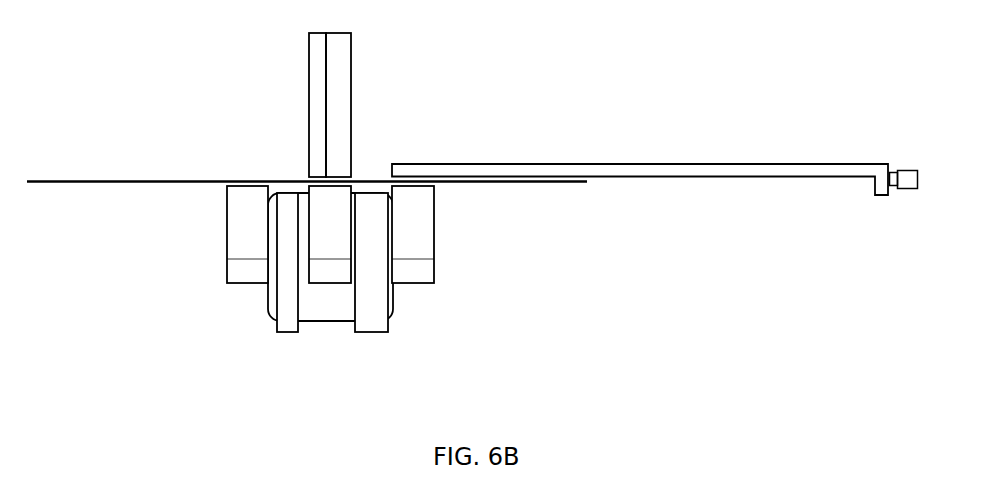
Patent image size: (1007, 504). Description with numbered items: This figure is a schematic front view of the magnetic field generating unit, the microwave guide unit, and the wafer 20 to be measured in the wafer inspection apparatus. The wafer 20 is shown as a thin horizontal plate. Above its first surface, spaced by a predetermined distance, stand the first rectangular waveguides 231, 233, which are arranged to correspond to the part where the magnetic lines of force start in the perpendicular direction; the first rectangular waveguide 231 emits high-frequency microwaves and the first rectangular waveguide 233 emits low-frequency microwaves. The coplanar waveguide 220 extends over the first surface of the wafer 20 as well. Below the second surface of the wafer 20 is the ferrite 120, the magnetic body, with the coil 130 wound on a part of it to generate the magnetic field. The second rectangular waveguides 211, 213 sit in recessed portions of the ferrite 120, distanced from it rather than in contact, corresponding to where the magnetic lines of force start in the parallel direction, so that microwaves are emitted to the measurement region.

The wafer 20 is at (90, 180).
The ferrite 120 is at (238, 218).
The coil 130 is at (328, 318).
The second rectangular waveguide 211 is at (287, 304).
The second rectangular waveguide 213 is at (380, 308).
The coplanar waveguide 220 is at (772, 166).
The first rectangular waveguide 231 is at (315, 55).
The first rectangular waveguide 233 is at (344, 81).